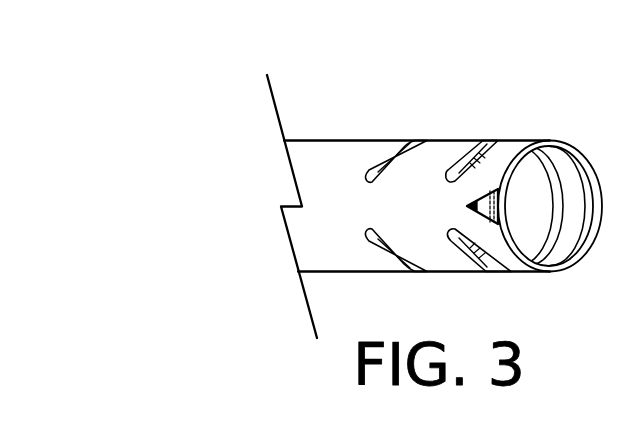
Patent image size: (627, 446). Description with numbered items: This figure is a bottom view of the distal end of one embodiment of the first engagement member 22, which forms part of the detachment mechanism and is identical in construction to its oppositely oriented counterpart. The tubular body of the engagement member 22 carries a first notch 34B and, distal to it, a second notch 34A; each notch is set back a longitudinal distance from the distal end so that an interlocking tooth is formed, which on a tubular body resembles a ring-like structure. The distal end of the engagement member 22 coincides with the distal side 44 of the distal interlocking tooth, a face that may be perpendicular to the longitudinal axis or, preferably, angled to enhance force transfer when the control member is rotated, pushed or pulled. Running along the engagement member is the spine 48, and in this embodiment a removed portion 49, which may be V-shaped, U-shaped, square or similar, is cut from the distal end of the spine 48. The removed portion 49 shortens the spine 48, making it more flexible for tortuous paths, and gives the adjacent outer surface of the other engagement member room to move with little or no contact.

The first engagement member 22 is at (325, 148).
The spine 48 is at (425, 201).
The second notch 34A is at (461, 170).
The first notch 34B is at (383, 170).
The distal side of the interlocking tooth 44 is at (563, 142).
The removed portion 49 is at (490, 188).